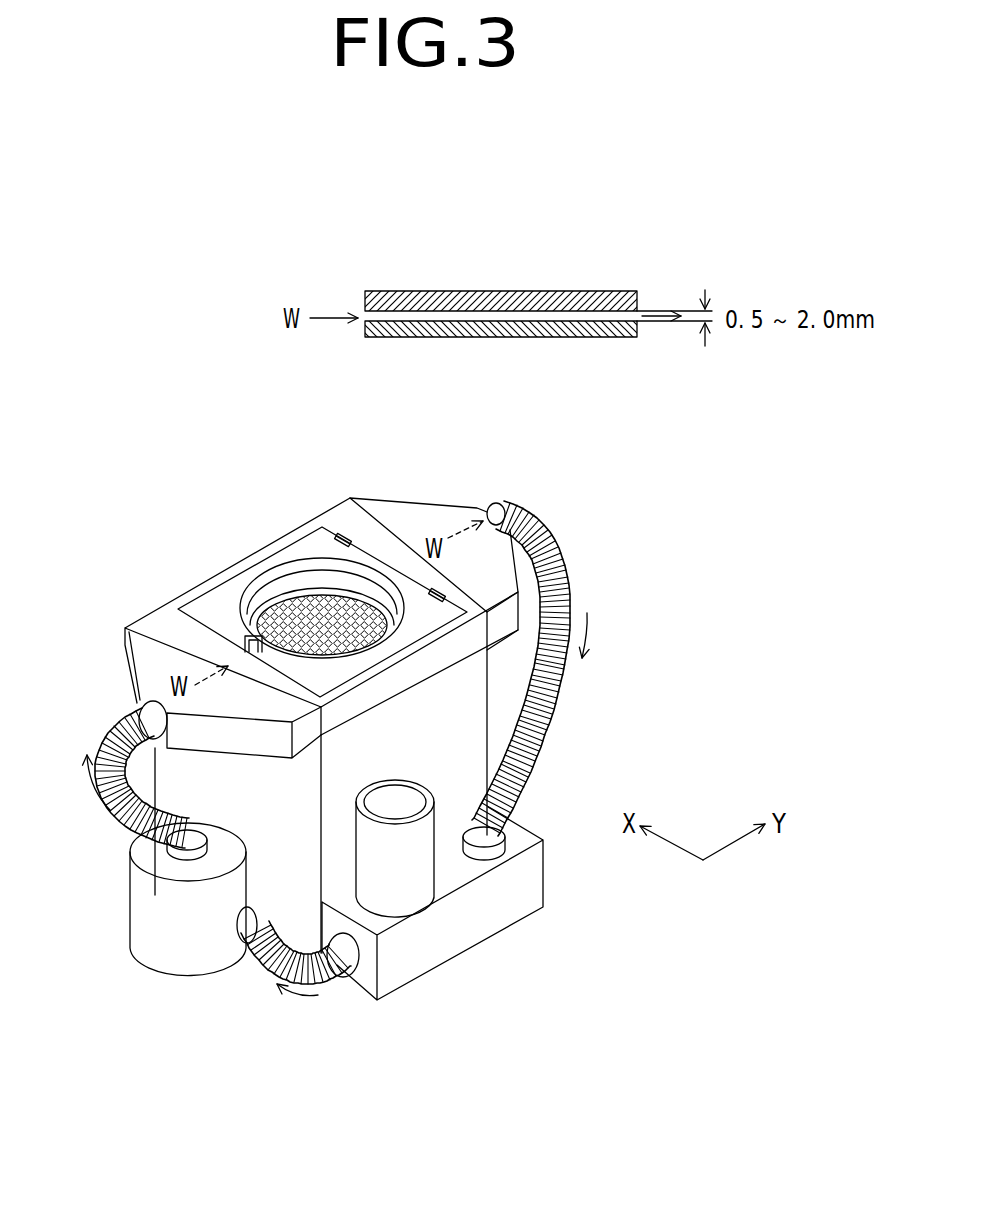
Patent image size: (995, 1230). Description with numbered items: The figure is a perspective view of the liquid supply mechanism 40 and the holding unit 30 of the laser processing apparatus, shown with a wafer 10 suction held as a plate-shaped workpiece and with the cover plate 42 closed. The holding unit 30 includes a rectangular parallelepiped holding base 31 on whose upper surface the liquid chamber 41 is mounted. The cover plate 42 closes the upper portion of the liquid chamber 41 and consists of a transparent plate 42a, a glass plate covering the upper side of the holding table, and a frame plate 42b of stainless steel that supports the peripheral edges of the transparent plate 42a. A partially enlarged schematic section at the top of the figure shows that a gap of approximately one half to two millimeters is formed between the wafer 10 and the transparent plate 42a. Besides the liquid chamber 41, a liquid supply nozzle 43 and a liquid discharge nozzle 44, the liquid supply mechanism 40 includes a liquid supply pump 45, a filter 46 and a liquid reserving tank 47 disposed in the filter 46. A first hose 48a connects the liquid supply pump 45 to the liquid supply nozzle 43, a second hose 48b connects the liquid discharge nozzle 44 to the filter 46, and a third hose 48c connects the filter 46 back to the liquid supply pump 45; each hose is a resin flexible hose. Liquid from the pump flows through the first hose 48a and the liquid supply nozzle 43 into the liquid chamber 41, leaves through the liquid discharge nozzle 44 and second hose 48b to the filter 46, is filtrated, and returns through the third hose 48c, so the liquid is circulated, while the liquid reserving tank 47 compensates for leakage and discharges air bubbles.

The wafer 10 is at (482, 338).
The holding unit 30 is at (467, 714).
The holding base 31 is at (453, 730).
The liquid supply mechanism 40 is at (135, 586).
The liquid chamber 41 is at (218, 580).
The cover plate 42 is at (472, 291).
The transparent plate 42a is at (317, 570).
The frame plate 42b is at (290, 555).
The liquid supply nozzle 43 is at (150, 655).
The liquid discharge nozzle 44 is at (397, 520).
The liquid supply pump 45 is at (148, 918).
The filter 46 is at (418, 947).
The liquid reserving tank 47 is at (415, 865).
The first hose 48a is at (122, 723).
The second hose 48b is at (573, 580).
The third hose 48c is at (270, 963).